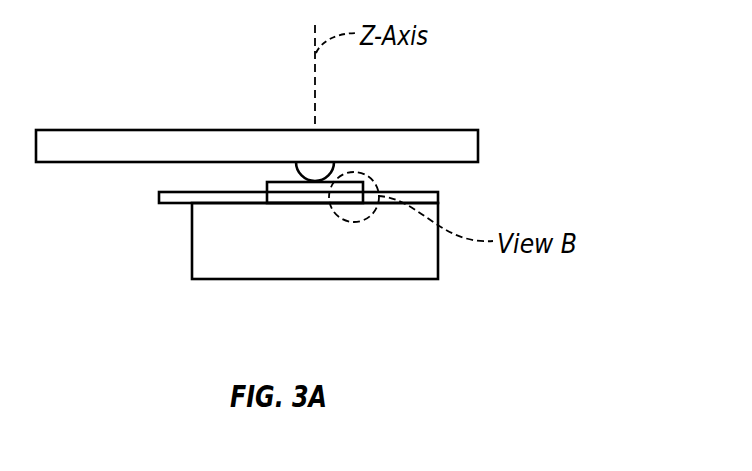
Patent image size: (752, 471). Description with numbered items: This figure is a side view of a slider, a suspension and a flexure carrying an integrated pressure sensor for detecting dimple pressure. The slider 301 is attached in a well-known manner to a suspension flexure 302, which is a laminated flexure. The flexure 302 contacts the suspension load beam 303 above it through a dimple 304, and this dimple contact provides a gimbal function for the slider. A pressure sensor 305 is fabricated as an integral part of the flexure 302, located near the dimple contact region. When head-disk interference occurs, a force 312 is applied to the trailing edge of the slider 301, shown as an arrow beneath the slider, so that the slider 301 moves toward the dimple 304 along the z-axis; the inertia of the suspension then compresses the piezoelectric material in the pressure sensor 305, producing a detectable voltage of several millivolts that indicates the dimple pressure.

The slider 301 is at (245, 282).
The suspension flexure 302 is at (157, 198).
The suspension load beam 303 is at (107, 129).
The dimple 304 is at (315, 168).
The pressure sensor 305 is at (365, 190).
The force 312 is at (427, 281).